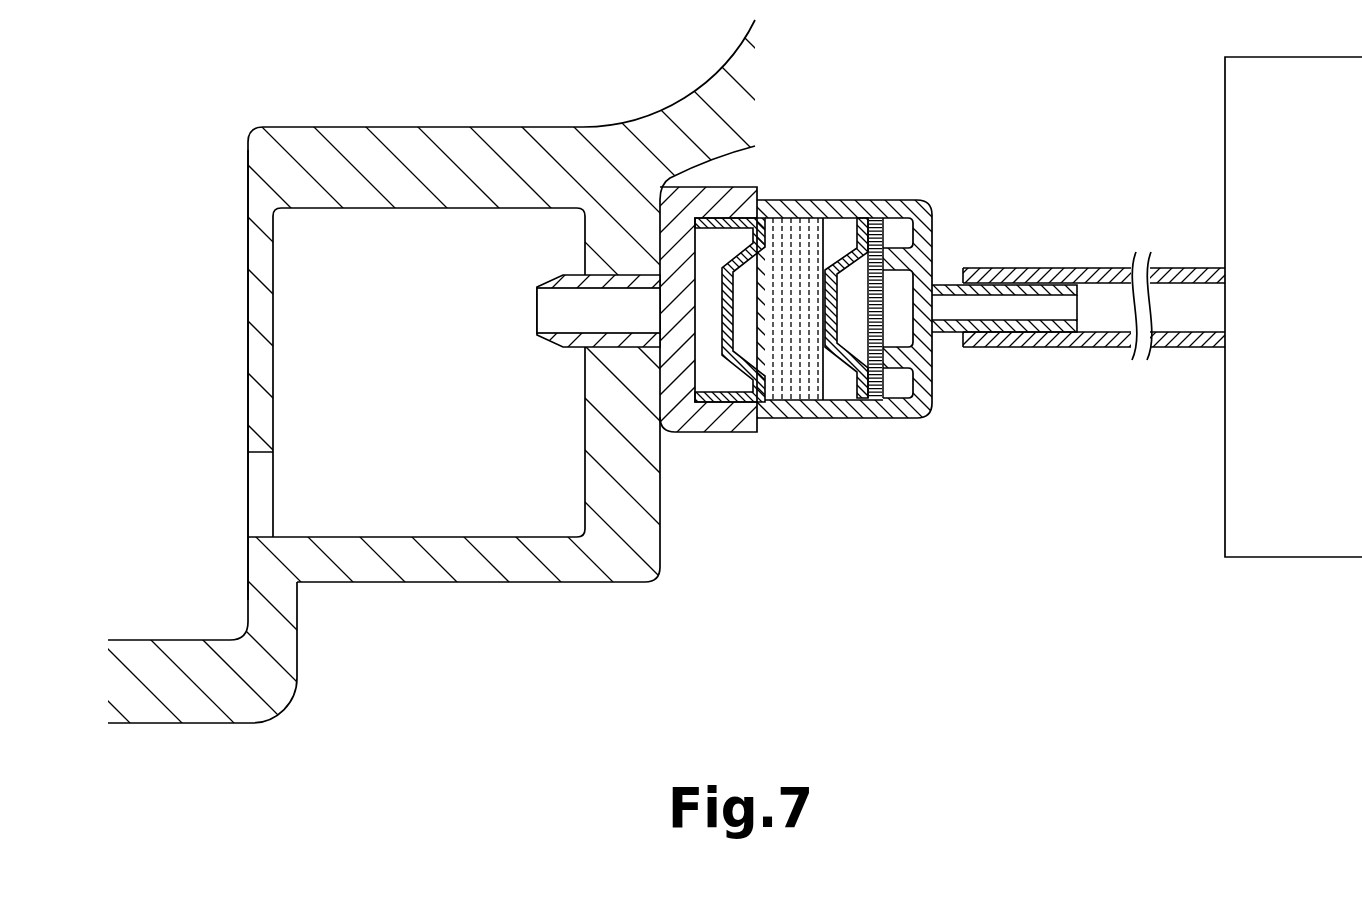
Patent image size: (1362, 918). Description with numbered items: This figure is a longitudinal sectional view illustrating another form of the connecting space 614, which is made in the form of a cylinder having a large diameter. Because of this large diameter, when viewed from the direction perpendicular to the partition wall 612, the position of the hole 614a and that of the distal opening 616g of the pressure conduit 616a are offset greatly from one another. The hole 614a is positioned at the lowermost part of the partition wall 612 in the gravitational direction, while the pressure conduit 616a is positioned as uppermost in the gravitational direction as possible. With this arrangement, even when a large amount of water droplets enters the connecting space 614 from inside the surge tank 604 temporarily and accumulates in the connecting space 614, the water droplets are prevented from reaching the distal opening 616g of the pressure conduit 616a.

The surge tank 604 is at (293, 690).
The partition wall 612 is at (258, 298).
The connecting space 614 is at (365, 232).
The hole 614a is at (255, 490).
The pressure conduit 616a is at (560, 273).
The distal opening 616g is at (535, 312).